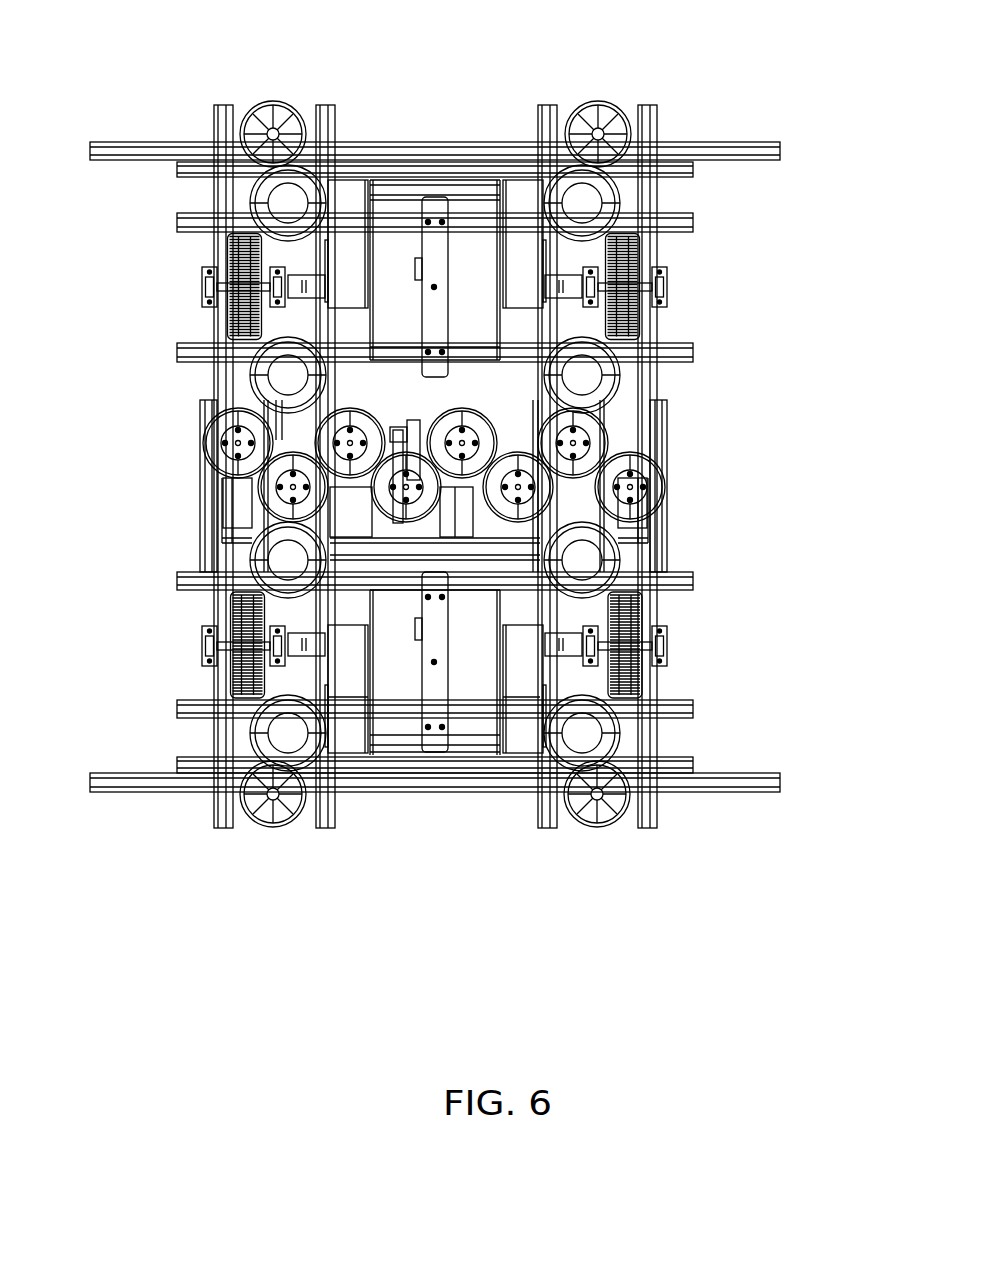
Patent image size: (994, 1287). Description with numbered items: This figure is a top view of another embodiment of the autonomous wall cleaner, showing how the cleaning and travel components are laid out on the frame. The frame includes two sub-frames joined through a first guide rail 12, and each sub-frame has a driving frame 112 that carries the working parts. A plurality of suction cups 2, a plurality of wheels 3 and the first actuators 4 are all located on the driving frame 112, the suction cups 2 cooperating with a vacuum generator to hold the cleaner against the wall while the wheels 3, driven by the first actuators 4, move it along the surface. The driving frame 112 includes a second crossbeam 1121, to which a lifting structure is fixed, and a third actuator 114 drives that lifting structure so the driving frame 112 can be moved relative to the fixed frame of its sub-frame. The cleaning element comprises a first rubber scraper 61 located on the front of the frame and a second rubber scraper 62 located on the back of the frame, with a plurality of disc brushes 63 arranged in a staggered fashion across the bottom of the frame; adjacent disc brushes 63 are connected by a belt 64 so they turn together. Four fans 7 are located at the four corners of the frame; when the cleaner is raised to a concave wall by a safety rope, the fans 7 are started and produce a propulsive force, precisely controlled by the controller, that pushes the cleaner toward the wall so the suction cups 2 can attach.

The first rubber scraper 61 is at (460, 153).
The second rubber scraper 62 is at (728, 773).
The fan 7 is at (608, 110).
The wheel 3 is at (640, 267).
The suction cup 2 is at (602, 370).
The belt 64 is at (618, 445).
The disc brush 63 is at (650, 482).
The first guide rail 12 is at (205, 493).
The driving frame 112 is at (683, 570).
The third actuator 114 is at (419, 628).
The first actuator 4 is at (533, 683).
The second crossbeam 1121 is at (434, 650).